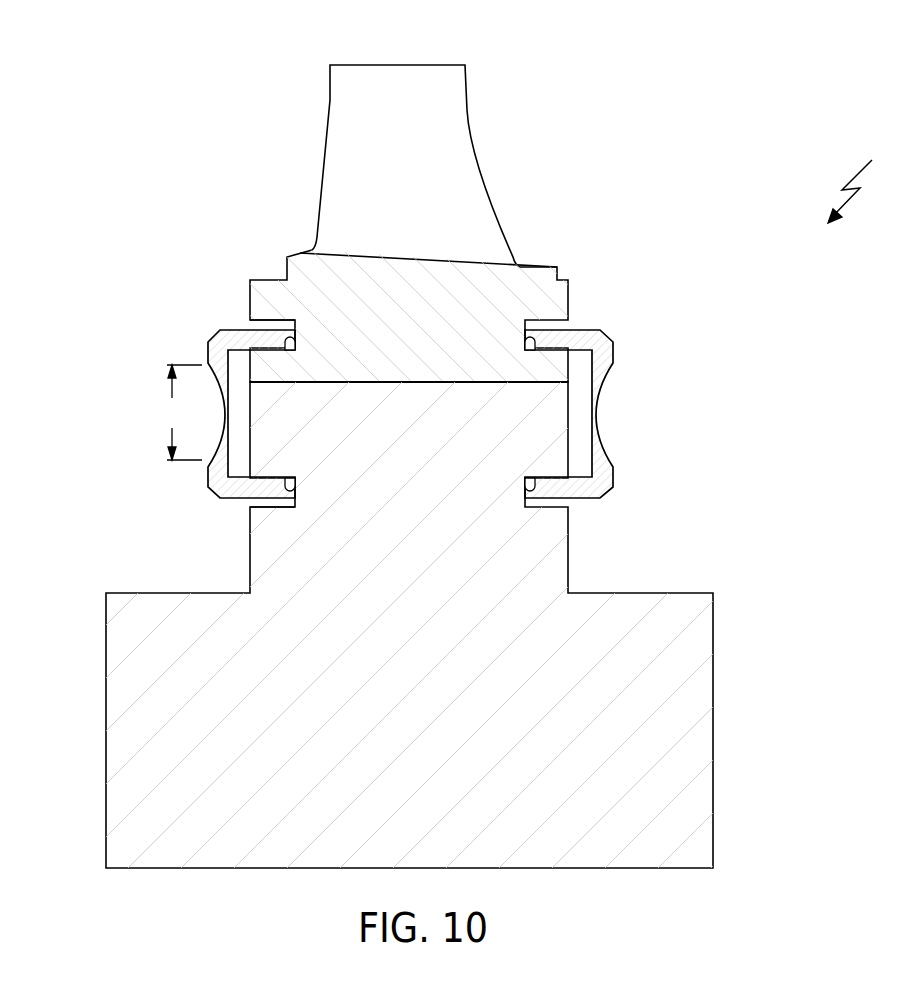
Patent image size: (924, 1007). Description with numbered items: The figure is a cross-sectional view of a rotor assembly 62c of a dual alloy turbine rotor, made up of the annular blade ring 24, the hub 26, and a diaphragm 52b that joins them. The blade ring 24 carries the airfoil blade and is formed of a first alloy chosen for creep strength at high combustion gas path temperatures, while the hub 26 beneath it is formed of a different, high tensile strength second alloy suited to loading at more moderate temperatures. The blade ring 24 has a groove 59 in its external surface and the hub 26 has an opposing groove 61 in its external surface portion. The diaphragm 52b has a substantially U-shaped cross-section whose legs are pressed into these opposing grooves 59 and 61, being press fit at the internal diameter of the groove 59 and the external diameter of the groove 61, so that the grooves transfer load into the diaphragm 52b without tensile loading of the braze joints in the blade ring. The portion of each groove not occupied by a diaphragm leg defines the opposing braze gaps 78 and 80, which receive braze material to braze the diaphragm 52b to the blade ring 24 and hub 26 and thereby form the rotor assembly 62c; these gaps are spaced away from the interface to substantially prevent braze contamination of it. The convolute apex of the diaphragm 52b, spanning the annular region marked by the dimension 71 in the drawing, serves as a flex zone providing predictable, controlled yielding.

The annular blade ring 24 is at (493, 190).
The hub 26 is at (715, 737).
The diaphragm 52b is at (208, 347).
The groove 59 is at (293, 346).
The groove 61 is at (530, 480).
The clip web height 71 is at (181, 412).
The braze gap 78 is at (252, 325).
The braze gap 80 is at (252, 508).
The rotor assembly 62c is at (867, 178).